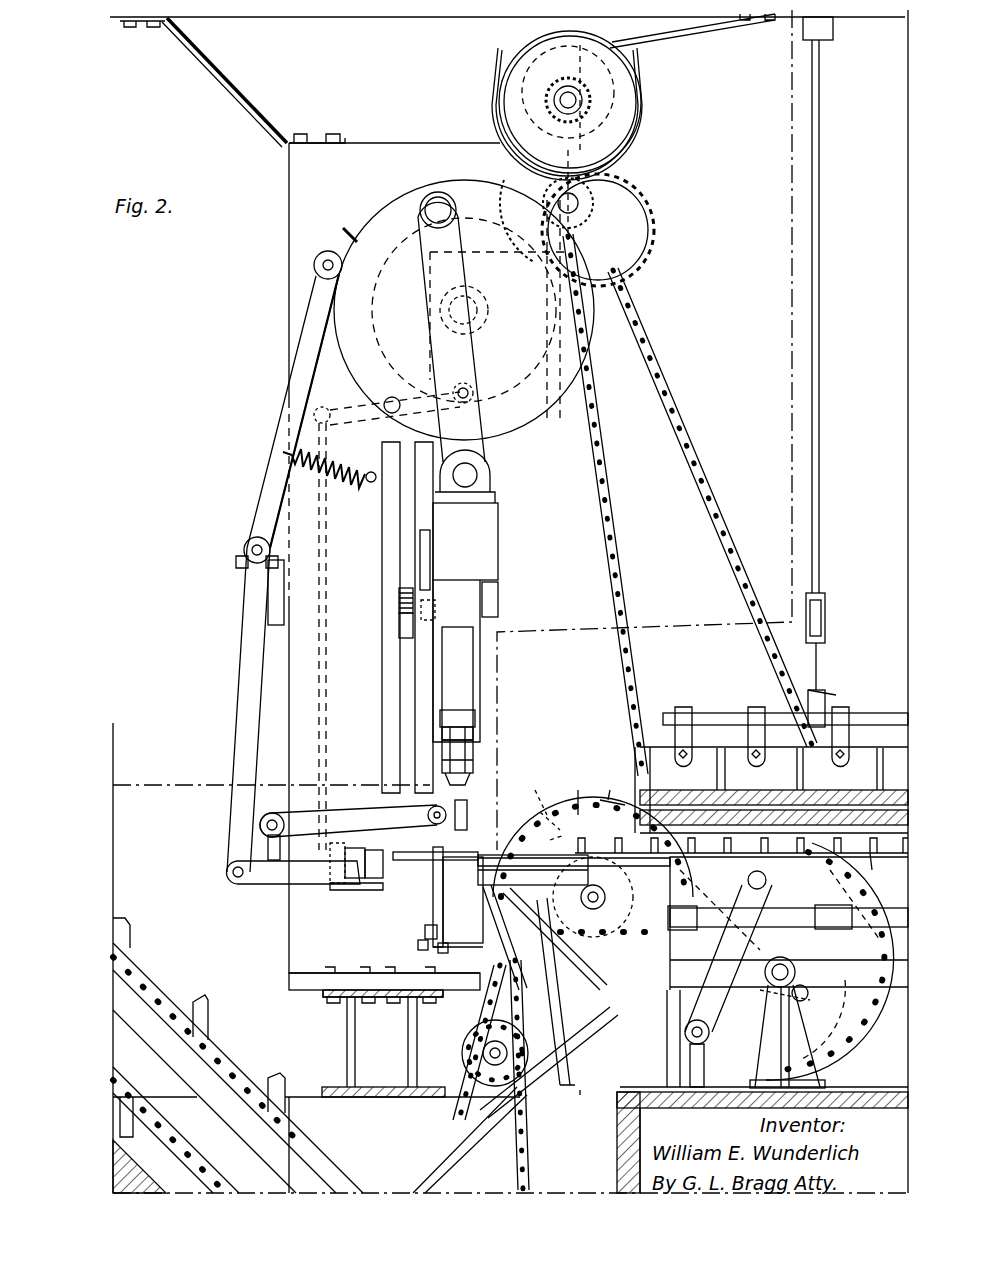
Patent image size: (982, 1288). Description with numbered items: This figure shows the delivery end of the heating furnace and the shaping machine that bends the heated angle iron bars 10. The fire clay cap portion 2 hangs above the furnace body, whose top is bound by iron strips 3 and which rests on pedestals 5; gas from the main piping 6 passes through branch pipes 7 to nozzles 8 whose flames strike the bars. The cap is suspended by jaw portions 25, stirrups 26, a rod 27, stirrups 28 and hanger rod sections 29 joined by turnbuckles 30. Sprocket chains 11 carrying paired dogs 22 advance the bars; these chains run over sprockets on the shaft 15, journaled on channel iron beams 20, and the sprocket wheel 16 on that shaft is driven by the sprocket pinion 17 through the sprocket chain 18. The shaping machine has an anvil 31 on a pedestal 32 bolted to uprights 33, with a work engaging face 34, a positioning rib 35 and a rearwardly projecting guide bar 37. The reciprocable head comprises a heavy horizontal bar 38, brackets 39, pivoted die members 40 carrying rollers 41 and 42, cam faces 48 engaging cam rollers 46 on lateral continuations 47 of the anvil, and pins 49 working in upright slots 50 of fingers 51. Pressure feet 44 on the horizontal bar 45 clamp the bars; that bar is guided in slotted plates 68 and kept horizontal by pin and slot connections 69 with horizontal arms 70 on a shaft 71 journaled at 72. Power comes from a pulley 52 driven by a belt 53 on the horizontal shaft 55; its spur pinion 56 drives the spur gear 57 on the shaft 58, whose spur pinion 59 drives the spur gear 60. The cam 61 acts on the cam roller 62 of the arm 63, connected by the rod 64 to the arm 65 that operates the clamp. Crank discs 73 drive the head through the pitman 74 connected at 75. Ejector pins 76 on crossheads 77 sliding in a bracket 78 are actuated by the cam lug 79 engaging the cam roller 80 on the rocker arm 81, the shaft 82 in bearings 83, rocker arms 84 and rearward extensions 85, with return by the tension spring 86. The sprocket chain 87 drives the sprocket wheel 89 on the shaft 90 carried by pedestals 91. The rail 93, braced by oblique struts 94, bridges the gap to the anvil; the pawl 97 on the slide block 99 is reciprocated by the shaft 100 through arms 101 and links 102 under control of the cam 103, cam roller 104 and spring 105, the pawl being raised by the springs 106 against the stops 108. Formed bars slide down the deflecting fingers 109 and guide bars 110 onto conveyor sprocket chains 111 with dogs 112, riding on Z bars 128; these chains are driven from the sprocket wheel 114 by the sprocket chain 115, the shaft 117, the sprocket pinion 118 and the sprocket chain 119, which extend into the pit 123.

The cap portion 2 is at (880, 855).
The iron strips 3 is at (870, 925).
The pedestals 5 is at (585, 1108).
The main piping 6 is at (800, 927).
The branch pipes 7 is at (835, 930).
The nozzles 8 is at (880, 890).
The angle iron bar 10 is at (715, 775).
The sprocket chains 11 is at (635, 950).
The shaft 15 is at (560, 935).
The sprocket wheel 16 is at (580, 815).
The sprocket pinion 17 is at (765, 972).
The sprocket chain 18 is at (575, 1088).
The channel iron beams 20 is at (670, 845).
The dogs 22 is at (840, 855).
The jaw portions 25 is at (870, 760).
The stirrups 26 is at (740, 730).
The rod 27 is at (878, 718).
The stirrups 28 is at (822, 700).
The hanger rod sections 29 is at (828, 660).
The turnbuckles 30 is at (827, 620).
The anvil 31 is at (460, 940).
The pedestal 32 is at (350, 1045).
The uprights 33 is at (295, 712).
The work engaging face 34 is at (460, 870).
The positioning rib 35 is at (430, 935).
The guide bar 37 is at (622, 802).
The heavy horizontal bar 38 is at (498, 525).
The brackets 39 is at (498, 600).
The shaping die members 40 is at (455, 688).
The work engaging rollers 41 is at (455, 764).
The work engaging rollers 42 is at (462, 745).
The pressure feet 44 is at (560, 830).
The horizontal bar 45 is at (547, 815).
The cam rollers 46 is at (440, 950).
The lateral continuations 47 is at (420, 945).
The cam faces 48 is at (440, 733).
The pins 49 is at (400, 615).
The upright slots 50 is at (400, 595).
The fingers 51 is at (425, 575).
The pulley 52 is at (620, 78).
The belt 53 is at (640, 42).
The horizontal shaft 55 is at (590, 105).
The spur pinion 56 is at (495, 80).
The spur gear 57 is at (648, 188).
The shaft 58 is at (580, 205).
The spur pinion 59 is at (640, 245).
The spur gear 60 is at (590, 355).
The cam 61 is at (538, 350).
The cam roller 62 is at (475, 393).
The intermediately pivoted arm 63 is at (340, 402).
The rod 64 is at (430, 560).
The intermediately pivoted arm 65 is at (332, 842).
The plates 68 is at (462, 800).
The pin and slot connections 69 is at (428, 812).
The horizontal arms 70 is at (350, 815).
The horizontal shaft 71 is at (265, 820).
The journal 72 is at (262, 845).
The crank discs 73 is at (528, 418).
The pitman 74 is at (475, 455).
The pitman connection 75 is at (478, 478).
The movable pins 76 is at (382, 882).
The crosshead 77 is at (348, 882).
The bracket 78 is at (340, 893).
The cam lug 79 is at (355, 222).
The cam roller 80 is at (325, 252).
The rocker arm 81 is at (300, 330).
The horizontal shaft 82 is at (252, 547).
The bearings 83 is at (282, 560).
The rocker arms 84 is at (248, 625).
The rearward extensions 85 is at (262, 878).
The tension spring 86 is at (342, 478).
The sprocket chain 87 is at (672, 342).
The sprocket wheel 89 is at (858, 1060).
The shaft 90 is at (812, 1000).
The pedestals 91 is at (800, 1060).
The rail 93 is at (548, 860).
The oblique struts 94 is at (592, 1085).
The pawl 97 is at (610, 800).
The slide block 99 is at (593, 903).
The shaft 100 is at (700, 1042).
The arms 101 is at (709, 1030).
The links 102 is at (745, 870).
The cam 103 is at (808, 990).
The cam roller 104 is at (740, 935).
The spring 105 is at (822, 1028).
The springs 106 is at (548, 870).
The stops 108 is at (560, 840).
The deflecting fingers 109 is at (445, 930).
The guide bars 110 is at (425, 1182).
The conveyor sprocket chains 111 is at (318, 1140).
The dogs 112 is at (195, 1178).
The sprocket wheel 114 is at (535, 1015).
The sprocket chain 115 is at (487, 1042).
The shaft 117 is at (490, 1052).
The sprocket pinion 118 is at (478, 1060).
The sprocket chain 119 is at (490, 1185).
The pit 123 is at (617, 1147).
The Z bars 128 is at (140, 1015).